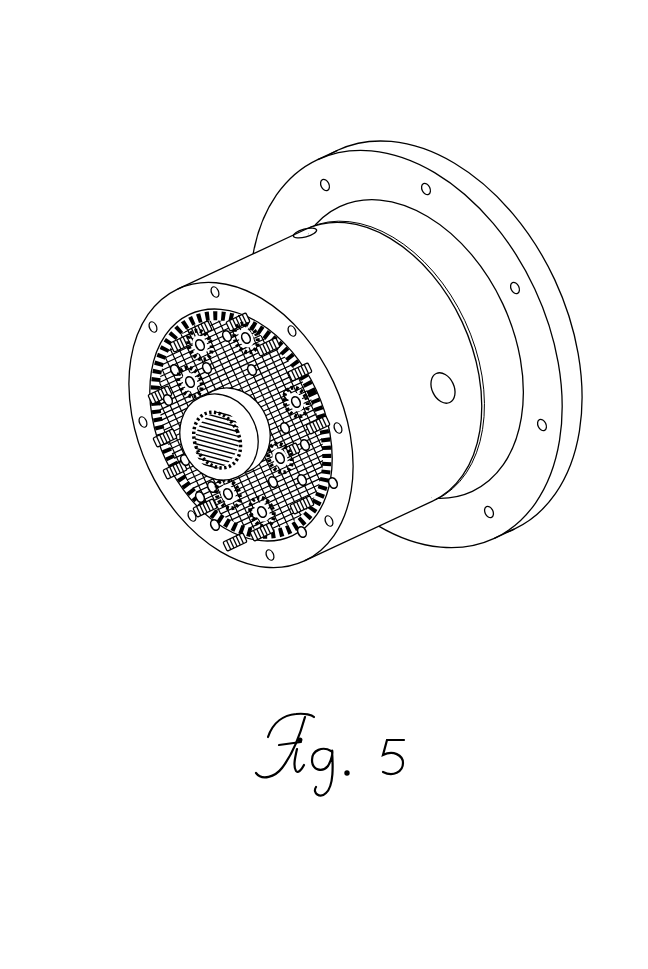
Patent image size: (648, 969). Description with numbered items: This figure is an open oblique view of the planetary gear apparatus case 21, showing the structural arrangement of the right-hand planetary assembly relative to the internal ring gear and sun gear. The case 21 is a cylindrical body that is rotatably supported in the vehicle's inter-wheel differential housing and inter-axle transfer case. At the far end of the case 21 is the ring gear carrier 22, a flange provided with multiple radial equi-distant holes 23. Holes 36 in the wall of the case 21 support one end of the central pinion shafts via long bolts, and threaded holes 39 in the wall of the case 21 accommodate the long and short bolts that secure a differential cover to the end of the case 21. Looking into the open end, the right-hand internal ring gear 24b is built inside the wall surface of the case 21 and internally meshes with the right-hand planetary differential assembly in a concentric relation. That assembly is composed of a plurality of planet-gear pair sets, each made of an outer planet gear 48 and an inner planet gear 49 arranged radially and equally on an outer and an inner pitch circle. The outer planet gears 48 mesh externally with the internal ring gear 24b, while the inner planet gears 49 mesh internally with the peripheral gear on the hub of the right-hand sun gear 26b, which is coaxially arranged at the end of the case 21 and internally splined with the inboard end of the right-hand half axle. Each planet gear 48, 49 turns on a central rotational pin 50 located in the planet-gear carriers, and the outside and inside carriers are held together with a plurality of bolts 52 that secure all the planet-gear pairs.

The planetary gear apparatus case 21 is at (395, 480).
The ring gear carrier 22 is at (375, 178).
The radial equi-distant holes 23 is at (433, 186).
The right-hand internal ring gear 24b is at (178, 462).
The right-hand sun gear 26b is at (268, 540).
The holes 36 is at (452, 376).
The threaded holes 39 is at (290, 320).
The outer planet gear 48 is at (213, 312).
The inner planet gear 49 is at (248, 330).
The central rotational pin 50 is at (180, 377).
The bolts 52 is at (200, 497).